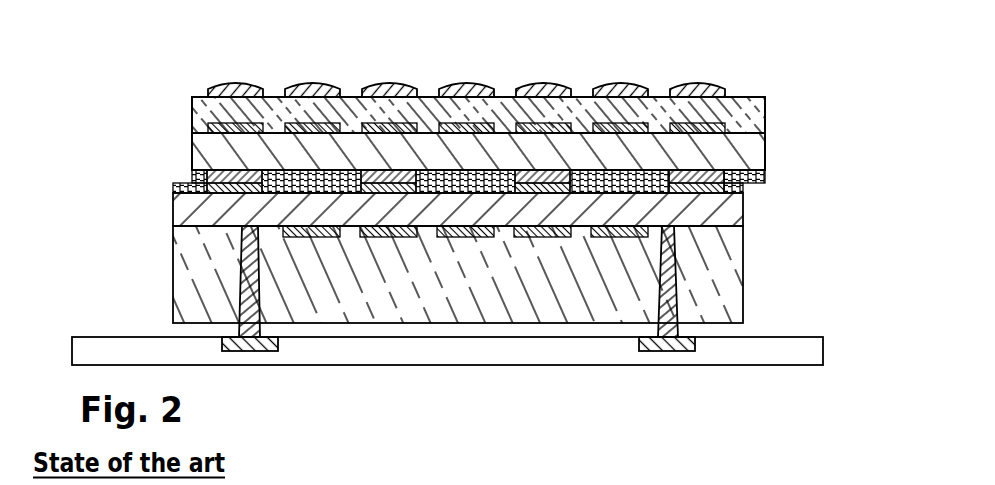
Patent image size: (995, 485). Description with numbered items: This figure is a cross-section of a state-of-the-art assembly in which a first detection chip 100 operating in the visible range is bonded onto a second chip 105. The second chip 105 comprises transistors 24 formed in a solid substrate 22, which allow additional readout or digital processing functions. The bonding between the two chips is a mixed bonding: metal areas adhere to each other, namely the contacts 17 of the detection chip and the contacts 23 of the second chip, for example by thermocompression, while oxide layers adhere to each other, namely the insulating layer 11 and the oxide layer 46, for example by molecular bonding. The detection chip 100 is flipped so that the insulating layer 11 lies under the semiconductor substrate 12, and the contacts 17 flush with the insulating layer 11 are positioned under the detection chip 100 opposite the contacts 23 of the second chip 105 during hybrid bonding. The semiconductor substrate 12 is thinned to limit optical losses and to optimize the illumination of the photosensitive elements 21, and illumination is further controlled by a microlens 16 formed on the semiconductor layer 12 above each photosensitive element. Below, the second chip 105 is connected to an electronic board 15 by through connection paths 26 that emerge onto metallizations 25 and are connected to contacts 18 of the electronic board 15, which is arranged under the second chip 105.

The first detection chip 100 is at (464, 107).
The second chip 105 is at (476, 305).
The semiconductor substrate 12 is at (345, 107).
The microlens 16 is at (463, 82).
The photosensitive elements 21 is at (537, 130).
The contacts 17 is at (233, 172).
The insulating layer 11 is at (193, 175).
The oxide layer 46 is at (174, 188).
The metallizations 25 is at (176, 210).
The contacts 23 is at (722, 213).
The solid substrate 22 is at (178, 255).
The transistors 24 is at (313, 238).
The through connection paths 26 is at (252, 343).
The contacts 18 is at (667, 352).
The electronic board 15 is at (723, 353).